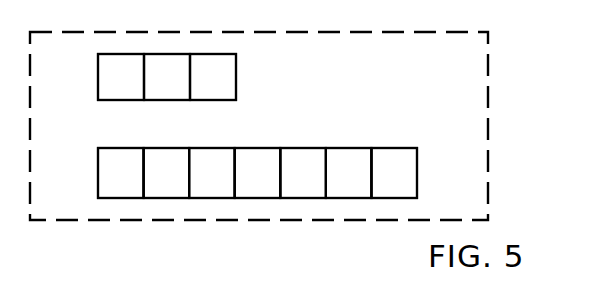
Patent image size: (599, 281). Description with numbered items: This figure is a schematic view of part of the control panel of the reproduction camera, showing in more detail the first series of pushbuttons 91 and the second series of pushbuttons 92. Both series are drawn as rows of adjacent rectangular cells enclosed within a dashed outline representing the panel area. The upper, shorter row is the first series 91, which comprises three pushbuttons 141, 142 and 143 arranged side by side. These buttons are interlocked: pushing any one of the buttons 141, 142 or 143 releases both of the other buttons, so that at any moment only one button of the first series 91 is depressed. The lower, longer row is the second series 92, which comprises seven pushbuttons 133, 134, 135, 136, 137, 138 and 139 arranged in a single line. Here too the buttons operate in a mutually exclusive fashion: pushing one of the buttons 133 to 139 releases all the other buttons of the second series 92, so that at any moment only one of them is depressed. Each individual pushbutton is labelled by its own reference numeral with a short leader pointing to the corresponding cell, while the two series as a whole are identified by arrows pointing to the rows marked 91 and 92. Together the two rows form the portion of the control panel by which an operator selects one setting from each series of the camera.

The first series of pushbuttons 91 is at (286, 78).
The second series of pushbuttons 92 is at (466, 177).
The pushbutton 133 is at (115, 152).
The pushbutton 134 is at (170, 152).
The pushbutton 135 is at (217, 152).
The pushbutton 136 is at (264, 156).
The pushbutton 137 is at (310, 156).
The pushbutton 138 is at (350, 157).
The pushbutton 139 is at (396, 155).
The pushbutton 141 is at (125, 90).
The pushbutton 142 is at (166, 88).
The pushbutton 143 is at (208, 90).